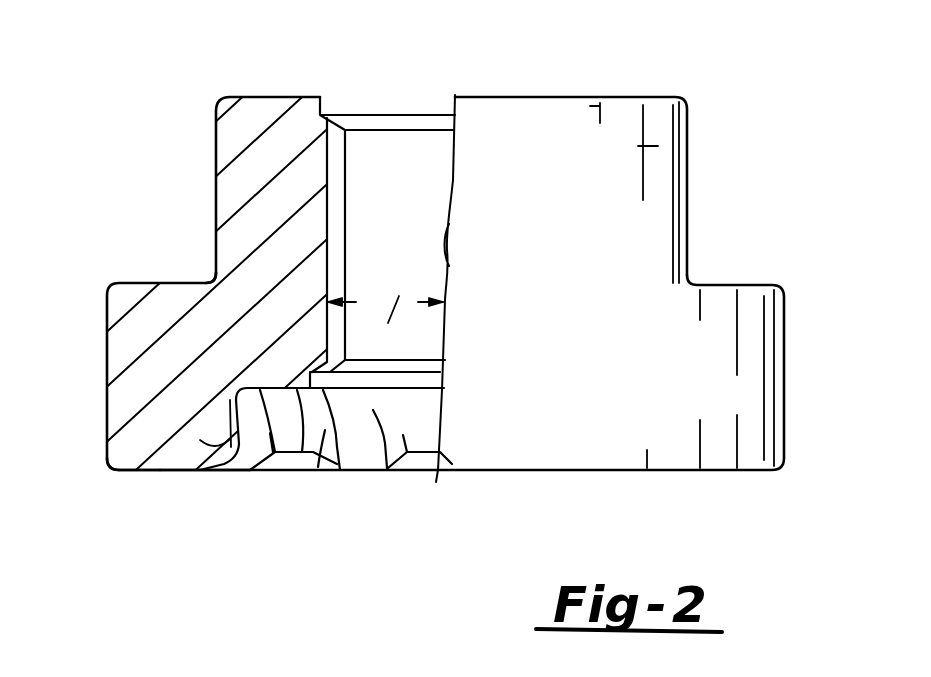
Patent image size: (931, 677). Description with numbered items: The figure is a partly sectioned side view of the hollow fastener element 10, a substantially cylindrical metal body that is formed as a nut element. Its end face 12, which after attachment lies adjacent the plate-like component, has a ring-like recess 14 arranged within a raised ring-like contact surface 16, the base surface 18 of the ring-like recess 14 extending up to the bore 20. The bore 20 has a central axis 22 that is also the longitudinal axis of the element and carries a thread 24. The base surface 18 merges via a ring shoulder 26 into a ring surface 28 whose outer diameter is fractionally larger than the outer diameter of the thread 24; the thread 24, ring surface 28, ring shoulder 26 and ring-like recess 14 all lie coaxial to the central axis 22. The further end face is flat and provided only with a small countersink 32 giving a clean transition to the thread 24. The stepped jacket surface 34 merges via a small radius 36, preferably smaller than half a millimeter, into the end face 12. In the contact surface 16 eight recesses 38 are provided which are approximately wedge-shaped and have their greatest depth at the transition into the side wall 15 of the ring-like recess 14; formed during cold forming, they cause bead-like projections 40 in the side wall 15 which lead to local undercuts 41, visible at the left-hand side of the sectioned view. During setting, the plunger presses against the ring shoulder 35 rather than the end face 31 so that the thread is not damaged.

The hollow fastener element 10 is at (703, 180).
The end face 12 is at (149, 474).
The ring-like recess 14 is at (352, 442).
The side wall 15 is at (258, 387).
The ring-like contact surface 16 is at (120, 482).
The base surface 18 is at (371, 400).
The bore 20 is at (364, 240).
The central axis 22 is at (443, 478).
The thread 24 is at (320, 152).
The ring shoulder 26 is at (280, 476).
The ring surface 28 is at (308, 476).
The end face 31 is at (617, 97).
The countersink 32 is at (348, 105).
The stepped jacket surface 34 is at (110, 328).
The ring shoulder 35 is at (178, 283).
The small radius 36 is at (104, 470).
The recesses 38 is at (207, 472).
The bead-like projections 40 is at (200, 440).
The local undercuts 41 is at (229, 420).